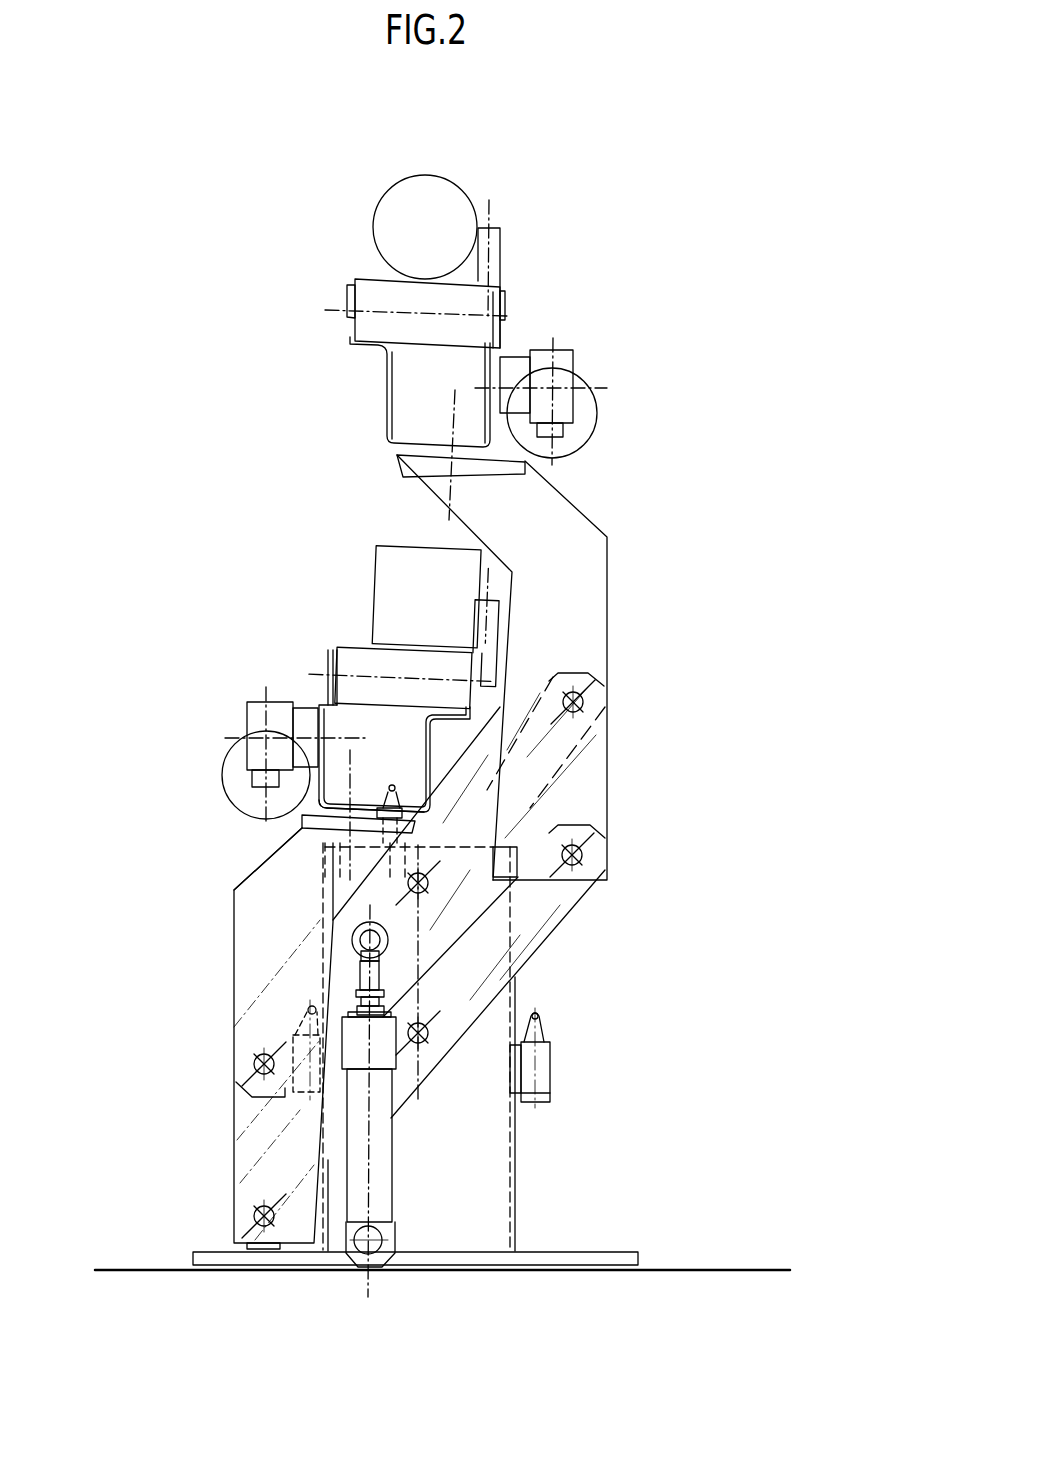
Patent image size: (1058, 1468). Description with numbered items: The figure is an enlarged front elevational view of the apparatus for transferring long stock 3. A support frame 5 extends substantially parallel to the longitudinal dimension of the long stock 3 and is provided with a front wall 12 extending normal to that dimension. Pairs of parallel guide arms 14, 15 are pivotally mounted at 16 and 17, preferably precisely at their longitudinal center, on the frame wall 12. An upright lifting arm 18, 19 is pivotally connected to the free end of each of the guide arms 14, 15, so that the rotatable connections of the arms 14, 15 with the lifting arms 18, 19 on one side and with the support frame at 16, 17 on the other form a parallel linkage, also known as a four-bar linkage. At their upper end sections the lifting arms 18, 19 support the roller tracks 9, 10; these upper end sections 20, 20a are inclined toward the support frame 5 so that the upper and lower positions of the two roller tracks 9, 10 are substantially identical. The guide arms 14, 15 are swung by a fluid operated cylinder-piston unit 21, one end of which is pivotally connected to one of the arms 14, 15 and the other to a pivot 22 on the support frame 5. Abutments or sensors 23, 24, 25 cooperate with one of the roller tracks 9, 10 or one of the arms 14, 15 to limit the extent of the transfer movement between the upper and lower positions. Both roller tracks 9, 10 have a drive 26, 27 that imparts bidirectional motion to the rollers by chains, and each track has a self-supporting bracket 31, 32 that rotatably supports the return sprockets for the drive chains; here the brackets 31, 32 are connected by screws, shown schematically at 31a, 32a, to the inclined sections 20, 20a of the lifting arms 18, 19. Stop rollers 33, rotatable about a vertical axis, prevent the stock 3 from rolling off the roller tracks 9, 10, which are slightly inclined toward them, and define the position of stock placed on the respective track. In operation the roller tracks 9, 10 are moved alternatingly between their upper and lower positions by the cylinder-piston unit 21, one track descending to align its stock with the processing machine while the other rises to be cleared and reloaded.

The long stock 3 is at (420, 213).
The support frame 5 is at (517, 1152).
The roller track 9 is at (503, 335).
The roller track 10 is at (327, 672).
The front wall 12 is at (466, 1238).
The guide arm 14 is at (567, 733).
The guide arm 15 is at (553, 892).
The pivot 16 is at (422, 890).
The pivot 17 is at (427, 1037).
The lifting arm 18 is at (578, 572).
The lifting arm 19 is at (263, 978).
The upper end section 20 is at (560, 527).
The upper end section 20a is at (276, 881).
The fluid operated cylinder-piston unit 21 is at (362, 1153).
The pivot 22 is at (367, 1268).
The abutment or sensor 23 is at (395, 787).
The abutment or sensor 24 is at (297, 1055).
The abutment or sensor 25 is at (550, 1080).
The drive 26 is at (570, 433).
The drive 27 is at (237, 762).
The bracket 31 is at (382, 373).
The screw 31a is at (455, 402).
The bracket 32 is at (433, 738).
The screw 32a is at (319, 795).
The stop roller 33 is at (500, 233).